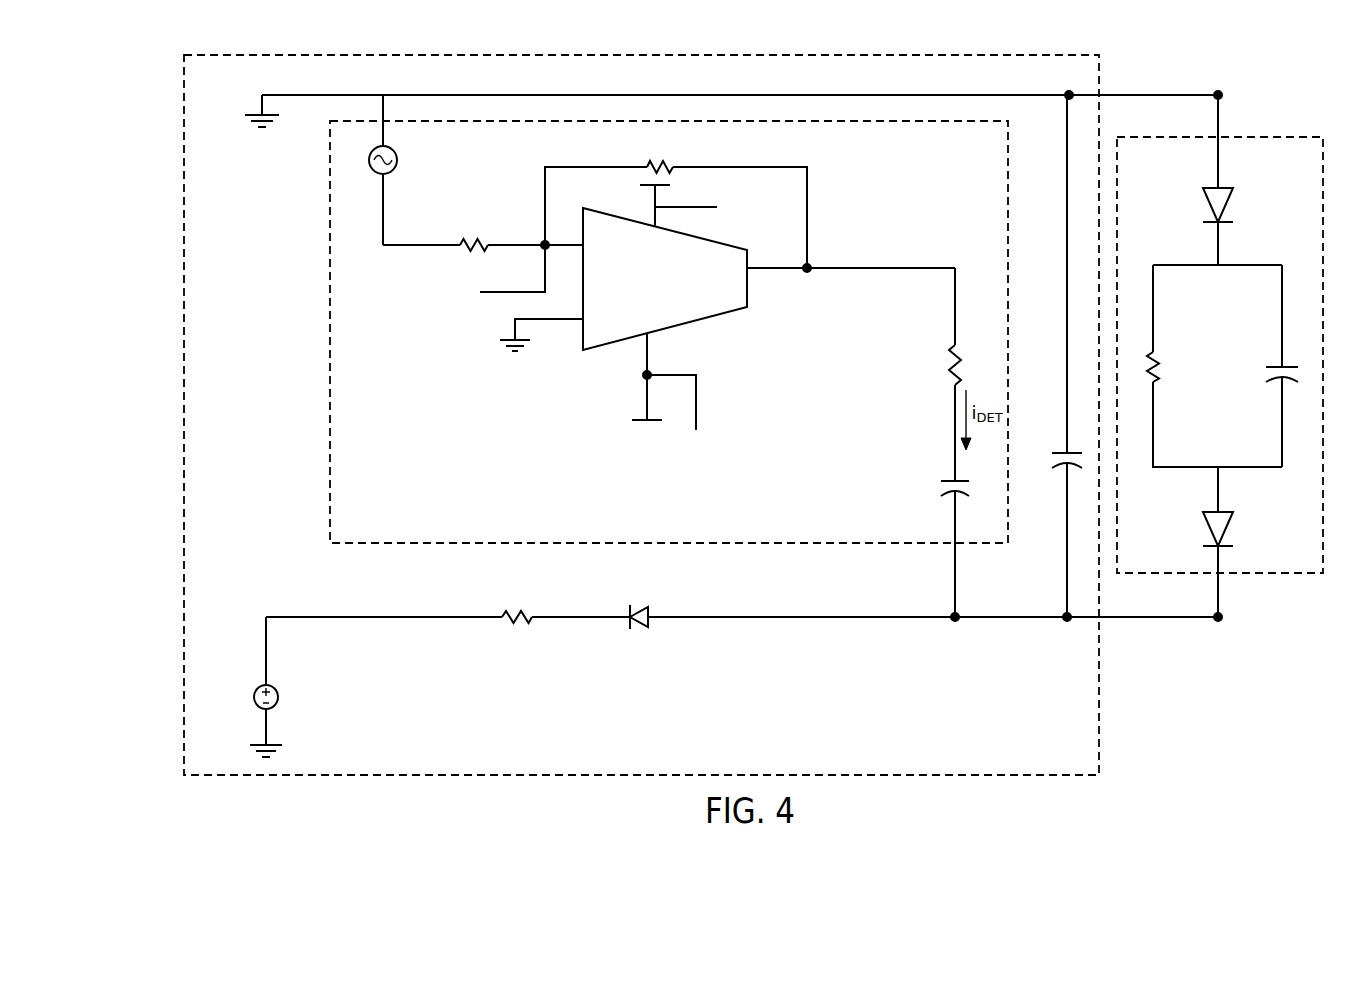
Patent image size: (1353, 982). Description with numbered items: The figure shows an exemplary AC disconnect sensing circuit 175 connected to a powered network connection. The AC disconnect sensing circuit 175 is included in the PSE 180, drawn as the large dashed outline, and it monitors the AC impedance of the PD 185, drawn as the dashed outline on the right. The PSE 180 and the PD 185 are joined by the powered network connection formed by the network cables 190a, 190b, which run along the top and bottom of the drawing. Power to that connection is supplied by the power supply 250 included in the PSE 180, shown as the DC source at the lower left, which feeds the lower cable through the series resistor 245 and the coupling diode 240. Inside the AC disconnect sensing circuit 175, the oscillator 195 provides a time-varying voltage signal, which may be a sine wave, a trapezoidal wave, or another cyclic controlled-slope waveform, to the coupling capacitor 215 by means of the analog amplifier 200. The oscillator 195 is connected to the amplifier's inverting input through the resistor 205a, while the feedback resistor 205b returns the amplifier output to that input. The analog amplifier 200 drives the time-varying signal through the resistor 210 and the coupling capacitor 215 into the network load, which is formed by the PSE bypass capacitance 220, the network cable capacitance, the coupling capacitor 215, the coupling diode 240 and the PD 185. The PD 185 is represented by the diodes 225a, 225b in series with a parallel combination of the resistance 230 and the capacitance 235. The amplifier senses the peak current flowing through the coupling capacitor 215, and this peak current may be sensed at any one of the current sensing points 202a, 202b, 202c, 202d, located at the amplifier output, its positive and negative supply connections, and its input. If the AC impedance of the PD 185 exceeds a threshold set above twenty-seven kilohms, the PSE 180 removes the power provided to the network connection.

The AC disconnect sensing circuit 175 is at (333, 455).
The PSE 180 is at (188, 510).
The PD 185 is at (1268, 136).
The network cable 190a is at (1162, 95).
The network cable 190b is at (1160, 618).
The oscillator 195 is at (372, 172).
The analog amplifier 200 is at (617, 347).
The current sensing point 202a is at (845, 268).
The current sensing point 202b is at (678, 206).
The current sensing point 202c is at (690, 375).
The current sensing point 202d is at (490, 298).
The feedback resistor RF1 205a is at (462, 240).
The feedback resistor RF2 205b is at (648, 163).
The detection resistor RDET 210 is at (952, 352).
The coupling capacitor 215 is at (948, 480).
The PSE bypass capacitance 220 is at (1060, 452).
The photodiode 225a is at (1210, 216).
The photodiode 225b is at (1210, 540).
The photodetector resistance RPD 230 is at (1156, 350).
The photodetector capacitance CPD 235 is at (1272, 366).
The coupling diode 240 is at (626, 613).
The series resistor RS 245 is at (503, 612).
The power supply 250 is at (278, 697).